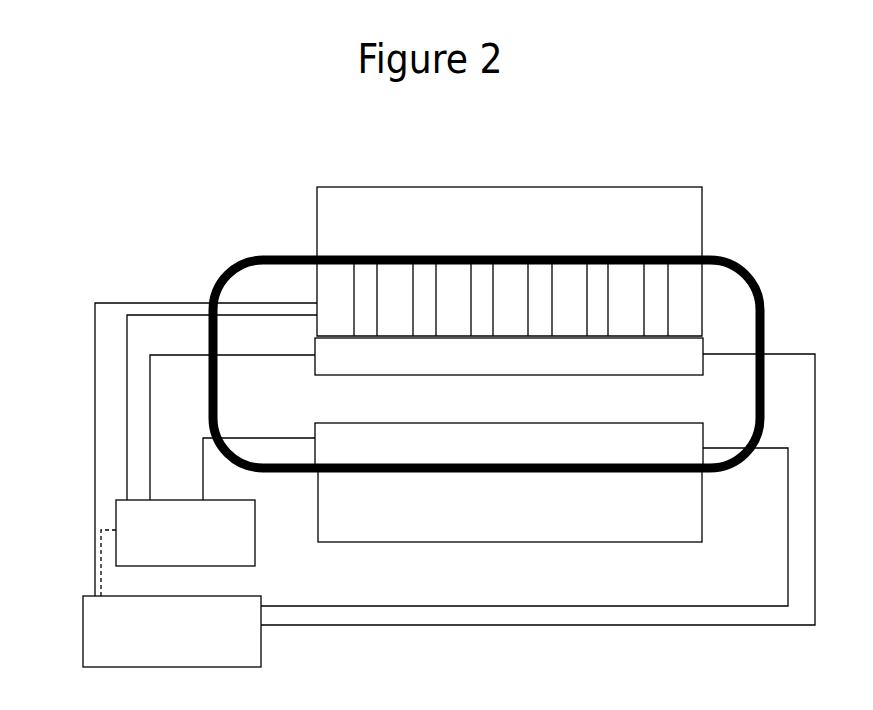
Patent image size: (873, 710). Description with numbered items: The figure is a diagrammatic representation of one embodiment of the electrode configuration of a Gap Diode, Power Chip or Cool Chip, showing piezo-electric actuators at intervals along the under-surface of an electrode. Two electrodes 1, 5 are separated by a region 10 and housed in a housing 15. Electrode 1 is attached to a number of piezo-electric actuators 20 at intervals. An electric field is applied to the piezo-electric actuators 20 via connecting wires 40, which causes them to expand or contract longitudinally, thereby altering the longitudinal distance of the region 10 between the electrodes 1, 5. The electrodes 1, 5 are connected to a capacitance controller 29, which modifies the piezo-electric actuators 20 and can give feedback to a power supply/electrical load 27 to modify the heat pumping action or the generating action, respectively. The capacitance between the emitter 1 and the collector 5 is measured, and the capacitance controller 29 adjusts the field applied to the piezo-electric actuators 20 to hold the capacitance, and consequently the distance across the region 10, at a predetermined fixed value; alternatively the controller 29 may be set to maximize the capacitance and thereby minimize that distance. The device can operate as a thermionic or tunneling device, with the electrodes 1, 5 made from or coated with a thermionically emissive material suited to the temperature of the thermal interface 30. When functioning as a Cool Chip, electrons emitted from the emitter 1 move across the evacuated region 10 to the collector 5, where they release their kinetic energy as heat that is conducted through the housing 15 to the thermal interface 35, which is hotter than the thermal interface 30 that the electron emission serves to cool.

The housing 15 is at (221, 273).
The thermal interface 30 is at (509, 223).
The piezo-electric actuators 20 is at (509, 300).
The electrode 1 is at (509, 356).
The region 10 is at (570, 401).
The electrode 5 is at (509, 445).
The thermal interface 35 is at (510, 505).
The connecting wires 40 is at (101, 546).
The capacitance controller 29 is at (255, 540).
The power supply/electrical load 27 is at (261, 650).